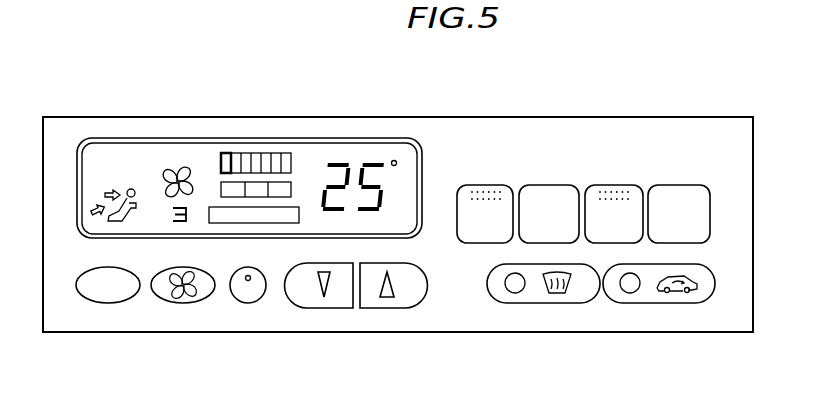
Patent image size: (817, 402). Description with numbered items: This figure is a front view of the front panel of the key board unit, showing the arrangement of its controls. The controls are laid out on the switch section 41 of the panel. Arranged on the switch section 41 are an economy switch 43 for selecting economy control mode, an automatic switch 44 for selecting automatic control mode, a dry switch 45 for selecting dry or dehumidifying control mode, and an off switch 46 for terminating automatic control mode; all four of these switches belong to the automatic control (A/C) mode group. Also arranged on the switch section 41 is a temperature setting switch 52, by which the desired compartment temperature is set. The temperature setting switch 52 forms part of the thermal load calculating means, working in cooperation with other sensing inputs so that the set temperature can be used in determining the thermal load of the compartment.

The switch section 41 is at (707, 130).
The economy switch 43 is at (530, 185).
The automatic switch 44 is at (632, 185).
The dry switch 45 is at (702, 204).
The off switch 46 is at (455, 187).
The temperature setting switch 52 is at (350, 315).